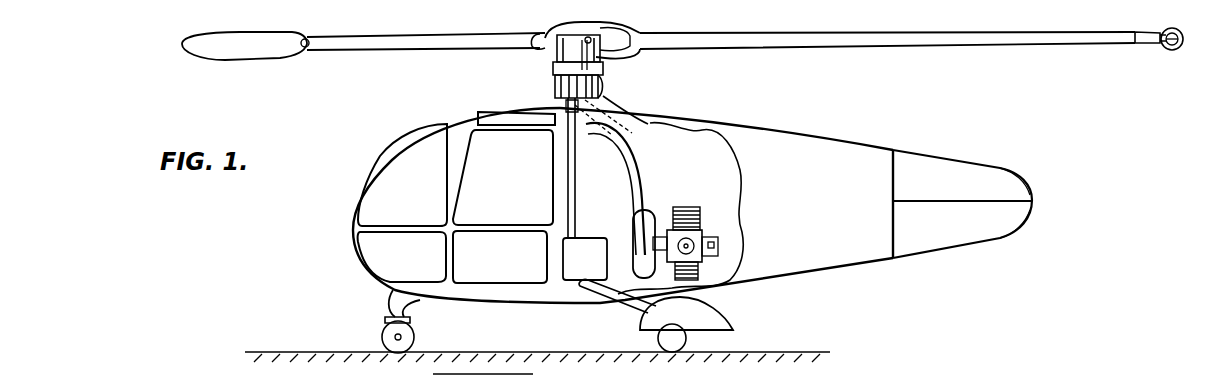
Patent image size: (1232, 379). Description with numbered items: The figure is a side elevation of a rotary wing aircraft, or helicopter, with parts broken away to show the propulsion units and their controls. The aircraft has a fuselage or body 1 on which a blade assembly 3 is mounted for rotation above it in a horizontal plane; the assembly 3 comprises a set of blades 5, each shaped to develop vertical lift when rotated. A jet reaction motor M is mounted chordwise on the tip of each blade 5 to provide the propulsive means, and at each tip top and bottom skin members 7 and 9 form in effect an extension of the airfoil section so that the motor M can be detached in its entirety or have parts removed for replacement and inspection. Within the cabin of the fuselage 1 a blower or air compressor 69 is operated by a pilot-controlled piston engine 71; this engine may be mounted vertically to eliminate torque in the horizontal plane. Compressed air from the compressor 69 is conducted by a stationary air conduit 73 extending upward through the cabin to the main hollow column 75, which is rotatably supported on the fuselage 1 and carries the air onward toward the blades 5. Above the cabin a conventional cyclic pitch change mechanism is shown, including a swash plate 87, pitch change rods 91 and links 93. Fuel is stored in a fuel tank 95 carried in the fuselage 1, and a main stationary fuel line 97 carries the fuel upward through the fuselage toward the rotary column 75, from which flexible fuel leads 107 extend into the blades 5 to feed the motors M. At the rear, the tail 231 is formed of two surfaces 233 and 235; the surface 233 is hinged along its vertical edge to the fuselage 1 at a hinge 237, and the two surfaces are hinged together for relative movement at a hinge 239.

The fuselage 1 is at (408, 145).
The blade assembly 3 is at (918, 62).
The blade 5 is at (378, 42).
The top skin member 7 is at (1142, 32).
The bottom skin member 9 is at (1150, 44).
The jet reaction motor M is at (246, 49).
The air compressor 69 is at (555, 90).
The piston engine 71 is at (700, 228).
The air conduit 73 is at (639, 181).
The hollow column 75 is at (570, 60).
The swash plate 87 is at (598, 76).
The pitch change rod 91 is at (605, 59).
The link 93 is at (591, 42).
The fuel tank 95 is at (578, 266).
The fuel line 97 is at (576, 229).
The flexible fuel lead 107 is at (605, 50).
The tail 231 is at (984, 160).
The tail surface 233 is at (1017, 192).
The tail surface 235 is at (1019, 221).
The hinge 237 is at (893, 167).
The hinge 239 is at (1032, 203).